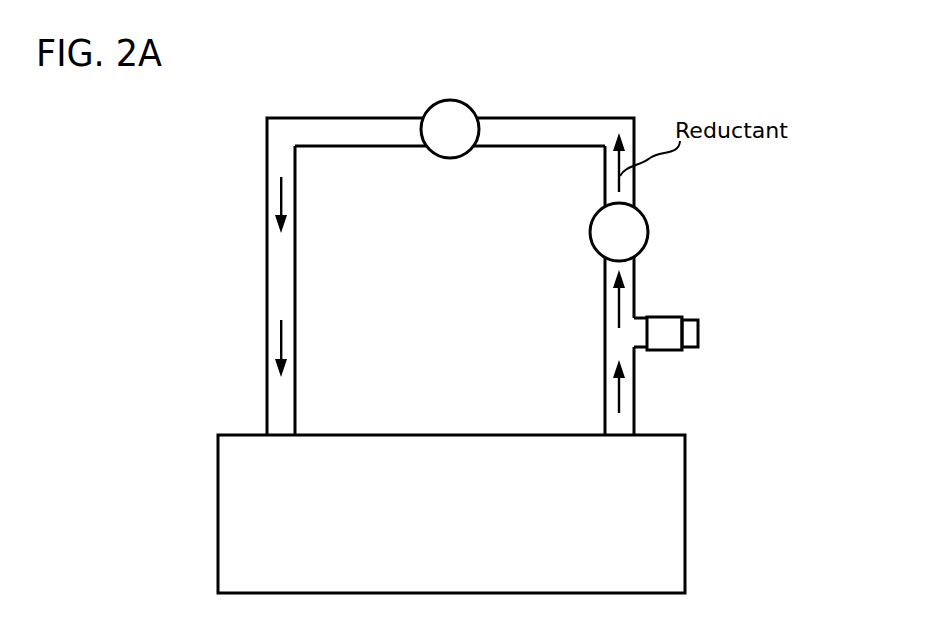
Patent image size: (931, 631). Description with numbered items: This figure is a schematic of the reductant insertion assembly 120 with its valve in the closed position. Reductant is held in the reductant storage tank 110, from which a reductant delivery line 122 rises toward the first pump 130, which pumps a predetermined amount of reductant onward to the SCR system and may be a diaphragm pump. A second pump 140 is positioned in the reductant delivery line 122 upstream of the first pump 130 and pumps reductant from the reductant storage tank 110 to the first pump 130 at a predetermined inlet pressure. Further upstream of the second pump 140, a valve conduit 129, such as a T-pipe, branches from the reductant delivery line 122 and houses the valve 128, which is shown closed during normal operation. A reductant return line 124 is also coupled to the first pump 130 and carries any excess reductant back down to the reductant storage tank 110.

The reductant storage tank 110 is at (430, 542).
The reductant insertion assembly 120 is at (417, 275).
The reductant delivery line 122 is at (634, 412).
The reductant return line 124 is at (295, 391).
The valve 128 is at (670, 320).
The valve conduit 129 is at (686, 350).
The first pump 130 is at (464, 110).
The second pump 140 is at (642, 228).